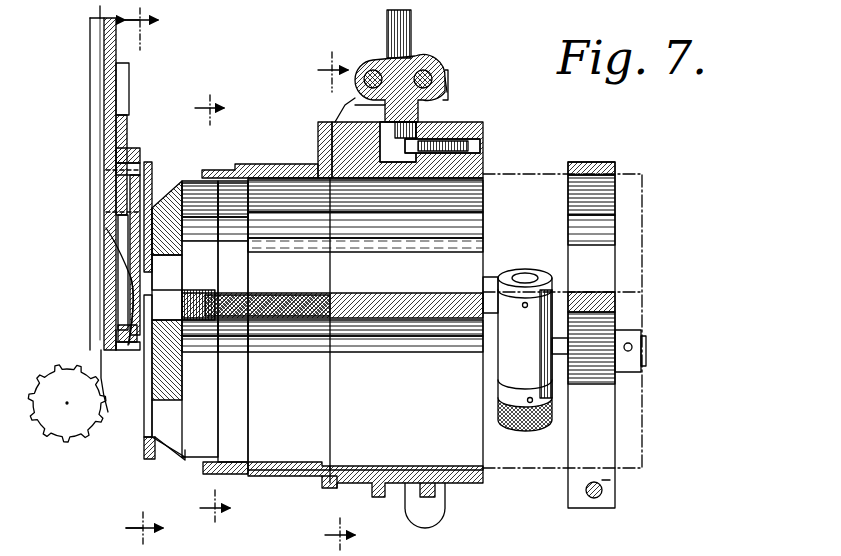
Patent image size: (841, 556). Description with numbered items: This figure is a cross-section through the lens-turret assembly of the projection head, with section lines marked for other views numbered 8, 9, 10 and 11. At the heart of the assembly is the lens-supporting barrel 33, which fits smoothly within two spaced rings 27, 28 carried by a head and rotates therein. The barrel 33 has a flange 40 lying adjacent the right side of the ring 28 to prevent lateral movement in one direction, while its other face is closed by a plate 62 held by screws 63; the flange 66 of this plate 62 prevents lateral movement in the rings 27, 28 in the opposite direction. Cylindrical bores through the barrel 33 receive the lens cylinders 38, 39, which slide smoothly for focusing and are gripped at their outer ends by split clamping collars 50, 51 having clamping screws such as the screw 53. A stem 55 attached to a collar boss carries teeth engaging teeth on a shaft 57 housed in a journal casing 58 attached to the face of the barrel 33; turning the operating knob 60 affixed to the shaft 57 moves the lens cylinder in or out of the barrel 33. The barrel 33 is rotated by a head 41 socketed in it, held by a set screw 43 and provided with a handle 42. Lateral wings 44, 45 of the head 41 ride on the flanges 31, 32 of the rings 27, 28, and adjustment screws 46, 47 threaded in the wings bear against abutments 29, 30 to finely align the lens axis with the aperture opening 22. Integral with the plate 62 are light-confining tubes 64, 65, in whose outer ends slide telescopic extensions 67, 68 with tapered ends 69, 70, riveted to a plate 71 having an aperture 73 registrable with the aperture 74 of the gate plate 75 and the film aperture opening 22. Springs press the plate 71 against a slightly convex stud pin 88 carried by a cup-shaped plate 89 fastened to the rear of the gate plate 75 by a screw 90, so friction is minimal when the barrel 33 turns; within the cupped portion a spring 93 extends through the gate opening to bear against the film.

The section line 8- 8 is at (208, 308).
The section line 9- 9 is at (328, 301).
The section line 10- 10 is at (156, 276).
The section line 11- 11 is at (119, 279).
The aperture opening 22 is at (92, 106).
The ring 27 is at (357, 466).
The ring 28 is at (452, 466).
The abutment 29 is at (355, 100).
The upper abutment 30 is at (445, 504).
The flange 31 is at (345, 100).
The flange 32 is at (495, 120).
The barrel 33 is at (383, 180).
The lens cylinder 38 is at (628, 255).
The lens cylinder 39 is at (635, 412).
The flange 40 is at (485, 125).
The head 41 is at (432, 65).
The handle 42 is at (412, 25).
The set screw 43 is at (485, 150).
The lateral wing 44 is at (372, 56).
The lateral wing 45 is at (447, 72).
The adjustment screw 46 is at (385, 72).
The adjustment screw 47 is at (449, 80).
The clamping collar 50 is at (592, 162).
The clamping collar 51 is at (606, 479).
The clamping screw 53 is at (597, 499).
The stem 55 is at (547, 312).
The shaft 57 is at (525, 275).
The journal casing 58 is at (510, 373).
The operating knob 60 is at (547, 420).
The plate 62 is at (315, 164).
The screw 63 is at (320, 138).
The light-confining tube 64 is at (240, 178).
The light-confining tube 65 is at (270, 478).
The flange 66 is at (322, 487).
The telescopic extension 67 is at (196, 181).
The telescopic extension 68 is at (201, 474).
The tapered outer end 69 is at (163, 205).
The tapered outer end 70 is at (170, 454).
The plate 71 is at (148, 160).
The aperture 73 is at (155, 408).
The aperture 74 is at (163, 262).
The gate plate 75 is at (120, 143).
The stud pin 88 is at (106, 303).
The cup-shaped plate 89 is at (126, 200).
The screw 90 is at (110, 170).
The spring 93 is at (108, 252).